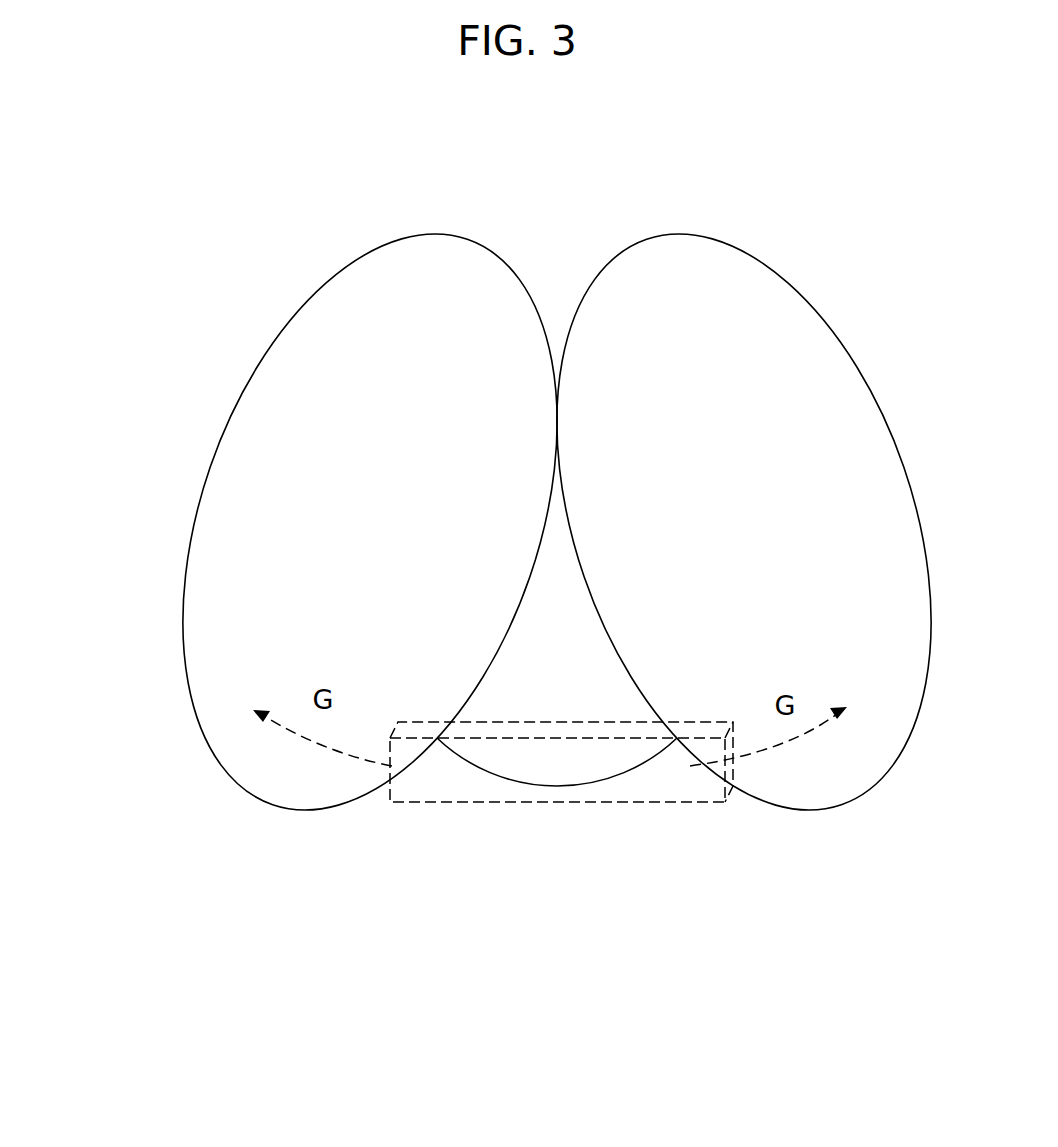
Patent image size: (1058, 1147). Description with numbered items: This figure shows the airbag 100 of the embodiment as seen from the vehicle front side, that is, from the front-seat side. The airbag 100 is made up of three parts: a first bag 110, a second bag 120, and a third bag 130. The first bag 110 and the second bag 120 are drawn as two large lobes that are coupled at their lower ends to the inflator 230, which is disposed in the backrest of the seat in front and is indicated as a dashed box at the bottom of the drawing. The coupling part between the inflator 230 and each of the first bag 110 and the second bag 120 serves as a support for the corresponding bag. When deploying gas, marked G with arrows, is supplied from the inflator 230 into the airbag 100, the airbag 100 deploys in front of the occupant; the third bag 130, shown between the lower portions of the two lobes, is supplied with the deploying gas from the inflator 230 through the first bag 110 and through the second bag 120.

The airbag 100 is at (203, 333).
The first bag 110 is at (298, 312).
The second bag 120 is at (788, 280).
The third bag 130 is at (573, 777).
The inflator 230 is at (507, 802).